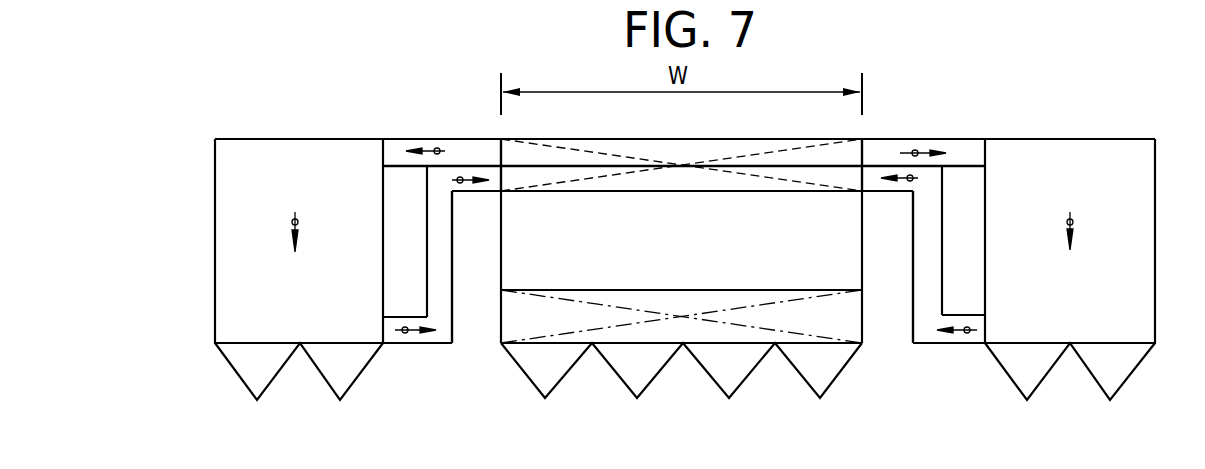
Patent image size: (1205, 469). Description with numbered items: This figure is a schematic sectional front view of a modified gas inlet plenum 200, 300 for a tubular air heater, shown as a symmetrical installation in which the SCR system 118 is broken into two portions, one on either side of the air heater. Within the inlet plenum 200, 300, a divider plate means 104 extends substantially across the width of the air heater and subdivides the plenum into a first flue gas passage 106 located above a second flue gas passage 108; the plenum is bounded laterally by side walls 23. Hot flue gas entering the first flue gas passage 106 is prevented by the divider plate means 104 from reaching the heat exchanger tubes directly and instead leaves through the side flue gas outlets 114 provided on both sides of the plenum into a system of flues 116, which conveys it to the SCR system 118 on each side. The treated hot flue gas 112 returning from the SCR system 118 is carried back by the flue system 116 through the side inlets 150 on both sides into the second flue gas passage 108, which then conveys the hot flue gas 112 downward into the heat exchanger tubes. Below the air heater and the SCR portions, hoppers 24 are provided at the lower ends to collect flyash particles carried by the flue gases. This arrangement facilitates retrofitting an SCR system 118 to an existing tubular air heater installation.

The side walls 23 is at (500, 205).
The hopper 24 is at (813, 380).
The divider plate means 104 is at (783, 163).
The first flue gas passage 106 is at (628, 147).
The second flue gas passage 108 is at (632, 190).
The hot flue gas 112 is at (434, 150).
The outlet end 114 is at (503, 152).
The system of flues 116 is at (471, 366).
The SCR system 118 is at (235, 147).
The inlet 150 is at (503, 175).
The gas inlet plenum 200 is at (737, 186).
The gas inlet plenum 300 is at (681, 241).